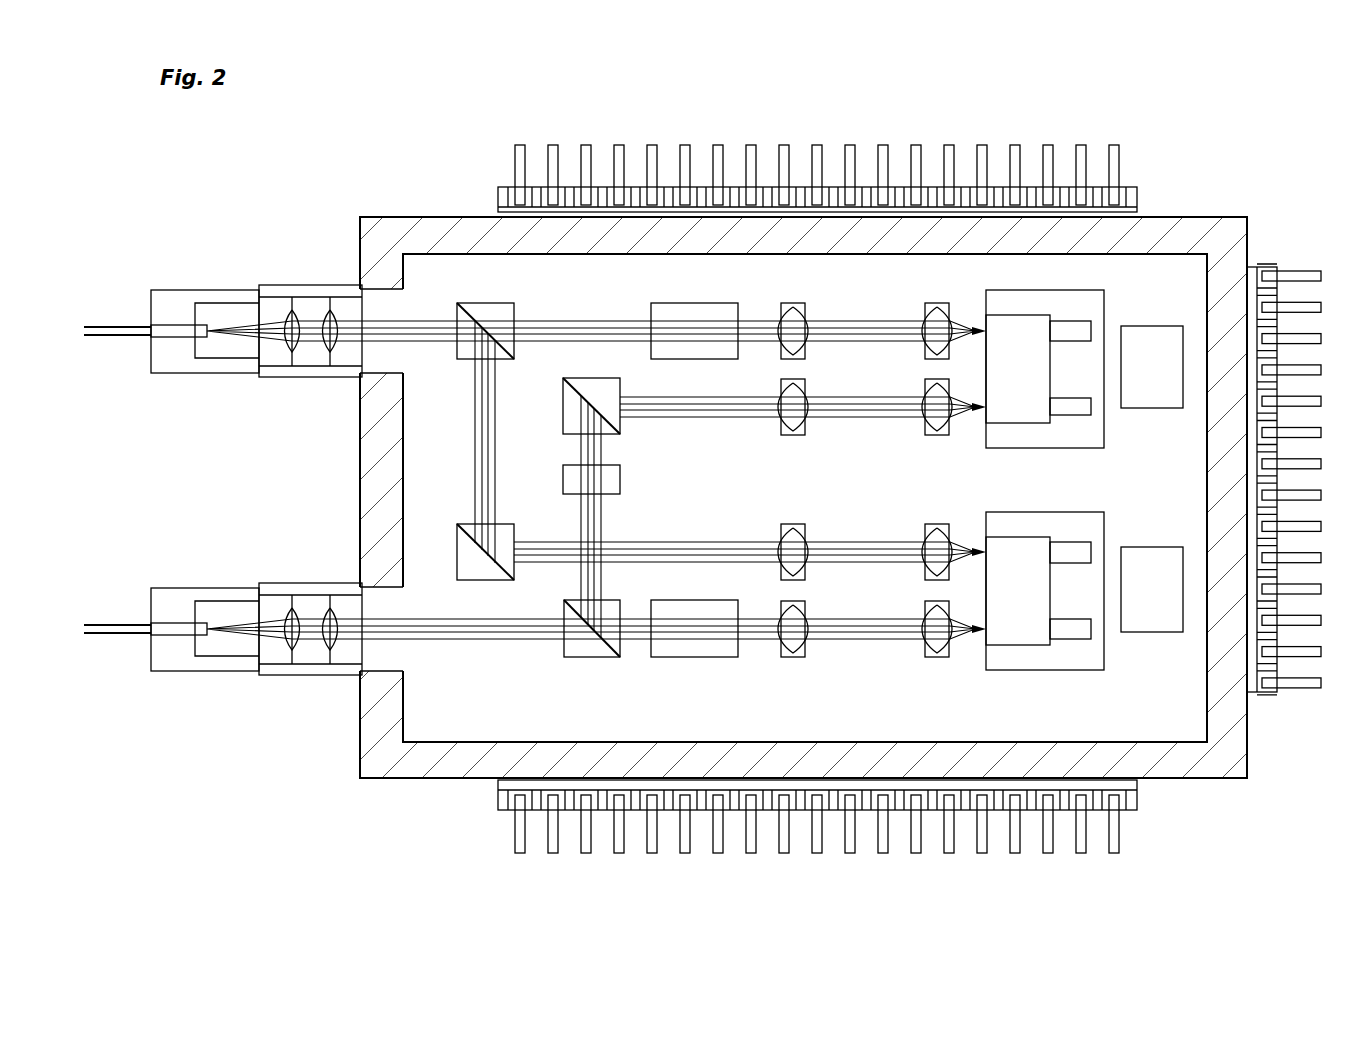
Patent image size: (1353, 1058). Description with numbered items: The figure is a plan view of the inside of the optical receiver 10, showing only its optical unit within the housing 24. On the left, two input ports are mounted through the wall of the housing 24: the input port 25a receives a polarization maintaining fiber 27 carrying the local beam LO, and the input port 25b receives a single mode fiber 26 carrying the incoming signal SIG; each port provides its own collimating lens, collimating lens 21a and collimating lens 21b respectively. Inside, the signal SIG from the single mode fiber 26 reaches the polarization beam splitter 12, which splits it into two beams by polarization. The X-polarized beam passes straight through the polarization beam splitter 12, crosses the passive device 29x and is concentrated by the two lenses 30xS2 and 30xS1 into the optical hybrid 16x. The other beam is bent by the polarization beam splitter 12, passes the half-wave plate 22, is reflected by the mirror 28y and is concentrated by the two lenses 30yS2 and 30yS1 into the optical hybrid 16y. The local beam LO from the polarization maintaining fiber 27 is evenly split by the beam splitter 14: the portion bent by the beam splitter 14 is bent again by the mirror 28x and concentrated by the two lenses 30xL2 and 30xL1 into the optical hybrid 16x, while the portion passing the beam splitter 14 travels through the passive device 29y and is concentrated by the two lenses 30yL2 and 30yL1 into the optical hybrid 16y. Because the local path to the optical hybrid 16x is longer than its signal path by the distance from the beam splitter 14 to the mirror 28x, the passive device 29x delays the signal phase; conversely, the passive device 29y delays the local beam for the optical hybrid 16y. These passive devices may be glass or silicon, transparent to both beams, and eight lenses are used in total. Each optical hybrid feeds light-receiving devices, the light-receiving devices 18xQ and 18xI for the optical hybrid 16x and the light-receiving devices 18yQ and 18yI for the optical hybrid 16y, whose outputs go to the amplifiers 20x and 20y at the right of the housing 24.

The optical receiver 10 is at (1281, 205).
The polarization beam splitter 12 is at (575, 647).
The beam splitter 14 is at (478, 312).
The optical hybrid 16x is at (1005, 560).
The optical hybrid 16y is at (1000, 342).
The light-receiving device 18xQ is at (1073, 555).
The light-receiving device 18xI is at (1085, 640).
The light-receiving device 18yQ is at (1073, 328).
The light-receiving device 18yI is at (1082, 410).
The amplifier 20x is at (1155, 585).
The amplifier 20y is at (1155, 350).
The collimating lens 21a is at (300, 310).
The collimating lens 21b is at (303, 610).
The half-wave plate 22 is at (622, 478).
The housing 24 is at (1185, 225).
The input port 25a is at (337, 292).
The input port 25b is at (312, 588).
The single mode fiber 26 is at (129, 625).
The polarization maintaining fiber 27 is at (128, 327).
The mirror 28x is at (463, 552).
The mirror 28y is at (577, 408).
The passive device 29x is at (672, 648).
The passive device 29y is at (665, 315).
The lens 30xL1 is at (935, 538).
The lens 30xL2 is at (796, 536).
The lens 30xS1 is at (930, 648).
The lens 30xS2 is at (793, 648).
The lens 30yL1 is at (930, 312).
The lens 30yL2 is at (795, 312).
The lens 30yS1 is at (937, 425).
The lens 30yS2 is at (790, 425).